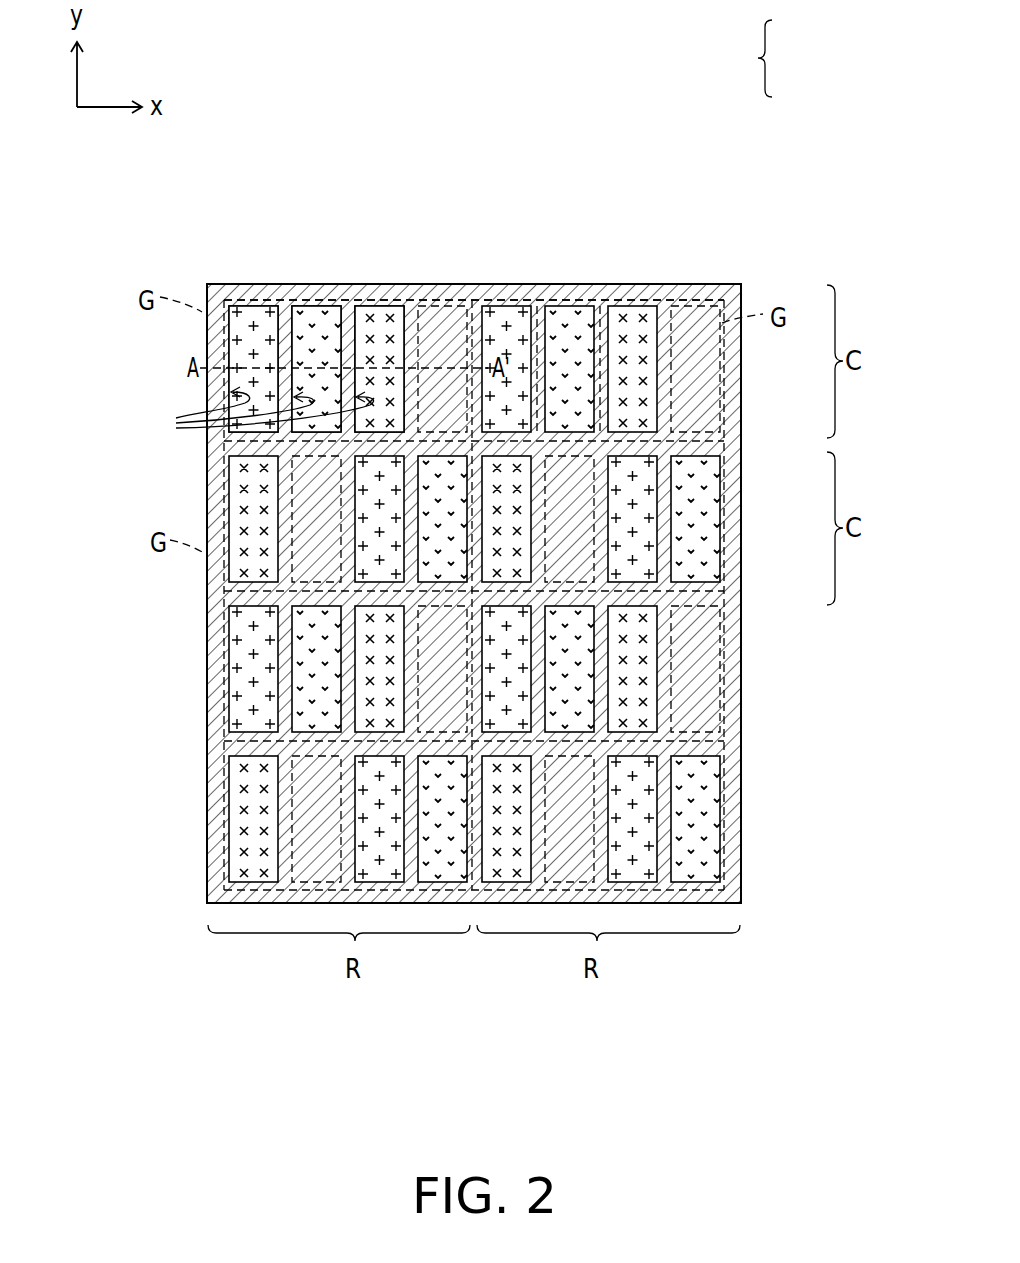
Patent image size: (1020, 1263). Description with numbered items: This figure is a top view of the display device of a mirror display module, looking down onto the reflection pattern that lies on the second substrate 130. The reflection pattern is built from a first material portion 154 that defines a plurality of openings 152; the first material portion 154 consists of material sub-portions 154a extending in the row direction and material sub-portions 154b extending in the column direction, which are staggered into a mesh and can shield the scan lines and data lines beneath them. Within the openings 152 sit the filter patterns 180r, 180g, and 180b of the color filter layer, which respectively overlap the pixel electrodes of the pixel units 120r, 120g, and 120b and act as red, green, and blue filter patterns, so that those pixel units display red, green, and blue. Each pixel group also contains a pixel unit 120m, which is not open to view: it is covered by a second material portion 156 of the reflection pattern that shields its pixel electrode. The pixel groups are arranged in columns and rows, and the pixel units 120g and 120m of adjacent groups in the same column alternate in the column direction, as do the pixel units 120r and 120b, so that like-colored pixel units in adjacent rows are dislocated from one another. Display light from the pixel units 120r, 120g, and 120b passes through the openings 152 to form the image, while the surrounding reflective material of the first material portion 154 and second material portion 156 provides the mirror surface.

The second substrate 130 is at (742, 790).
The second material portion 156 is at (178, 587).
The pixel unit 120m is at (445, 286).
The first material portion 154 is at (771, 60).
The material sub-portions 154a is at (700, 443).
The material sub-portions 154b is at (533, 302).
The filter pattern 180r is at (183, 641).
The pixel unit 120r is at (242, 308).
The filter pattern 180g is at (190, 695).
The pixel unit 120g is at (305, 308).
The filter pattern 180b is at (180, 485).
The pixel unit 120b is at (377, 310).
The openings 152 is at (252, 414).